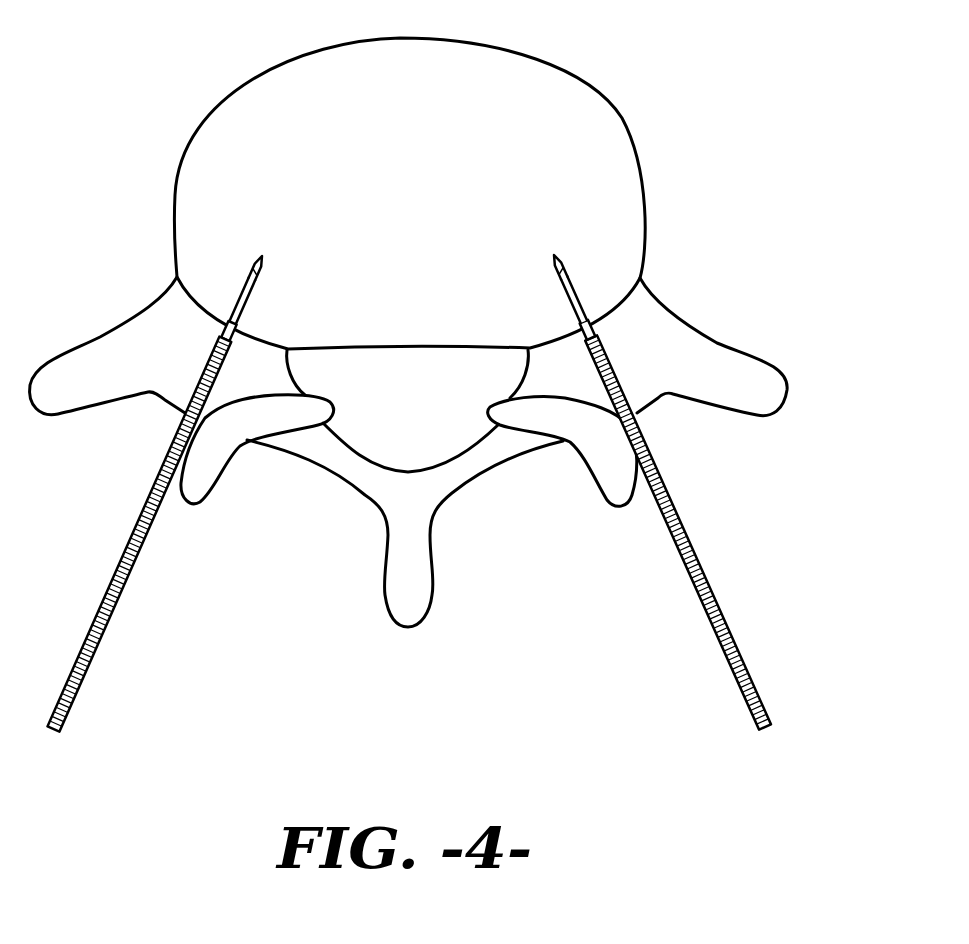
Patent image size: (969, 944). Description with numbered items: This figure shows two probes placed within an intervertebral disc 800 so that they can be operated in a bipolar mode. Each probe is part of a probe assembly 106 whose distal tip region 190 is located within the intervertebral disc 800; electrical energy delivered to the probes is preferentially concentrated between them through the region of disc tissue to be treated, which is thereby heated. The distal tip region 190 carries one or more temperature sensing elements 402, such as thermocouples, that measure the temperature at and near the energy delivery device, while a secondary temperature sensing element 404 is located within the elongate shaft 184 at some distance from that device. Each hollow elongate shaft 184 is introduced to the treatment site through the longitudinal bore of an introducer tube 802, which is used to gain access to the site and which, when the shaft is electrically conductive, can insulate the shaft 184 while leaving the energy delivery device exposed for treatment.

The intervertebral disc 800 is at (500, 85).
The temperature sensing element 402 is at (554, 255).
The elongate shaft 184 is at (580, 290).
The secondary temperature sensing element 404 is at (592, 315).
The introducer tube 802 is at (733, 633).
The probe assembly 106 is at (214, 255).
The distal tip region 190 is at (290, 285).